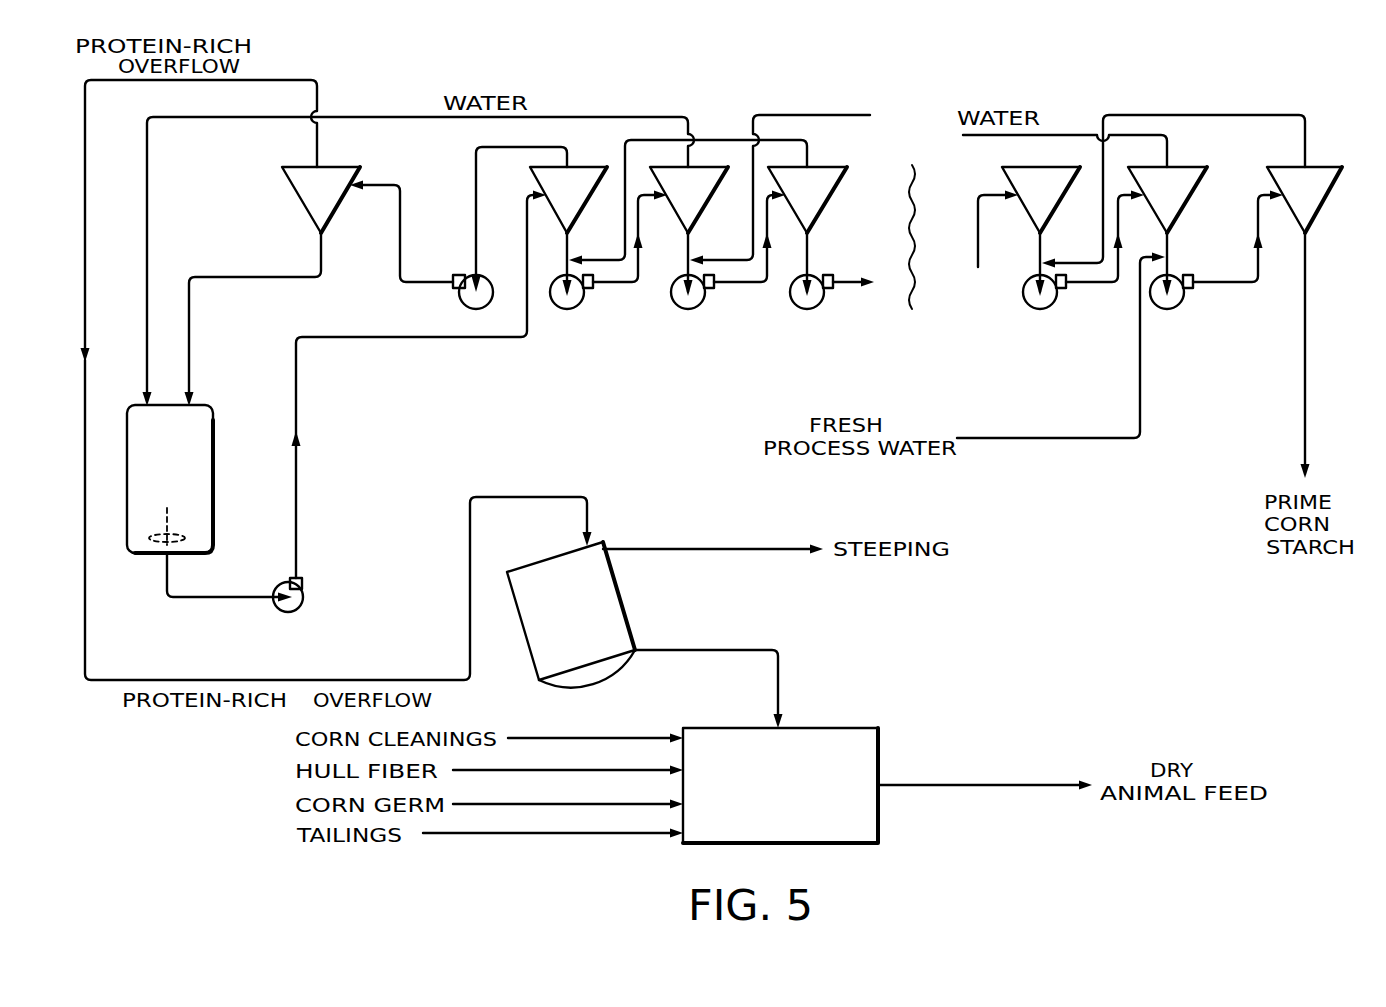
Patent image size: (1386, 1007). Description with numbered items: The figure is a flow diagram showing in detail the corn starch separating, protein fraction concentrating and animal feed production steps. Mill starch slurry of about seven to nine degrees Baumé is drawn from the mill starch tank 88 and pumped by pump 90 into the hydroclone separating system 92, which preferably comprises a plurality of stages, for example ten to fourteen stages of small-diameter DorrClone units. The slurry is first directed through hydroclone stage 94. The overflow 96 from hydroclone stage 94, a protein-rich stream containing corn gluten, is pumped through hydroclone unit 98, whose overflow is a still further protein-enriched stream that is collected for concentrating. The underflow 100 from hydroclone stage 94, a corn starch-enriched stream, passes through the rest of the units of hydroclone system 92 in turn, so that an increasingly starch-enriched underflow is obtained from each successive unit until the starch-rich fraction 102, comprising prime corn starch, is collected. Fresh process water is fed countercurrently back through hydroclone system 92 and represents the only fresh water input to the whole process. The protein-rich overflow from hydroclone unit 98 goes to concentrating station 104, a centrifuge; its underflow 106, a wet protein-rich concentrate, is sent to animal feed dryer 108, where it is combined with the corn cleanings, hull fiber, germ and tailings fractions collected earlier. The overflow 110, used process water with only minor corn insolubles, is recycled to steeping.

The mill starch tank 88 is at (216, 473).
The pump 90 is at (305, 602).
The hydroclone separating system 92 is at (1345, 70).
The hydroclone stage 94 is at (535, 179).
The overflow 96 is at (472, 191).
The hydroclone unit 98 is at (298, 199).
The underflow 100 is at (628, 284).
The starch-rich fraction 102 is at (1307, 338).
The concentrating station 104 is at (605, 540).
The underflow 106 is at (780, 679).
The animal feed dryer 108 is at (868, 726).
The overflow 110 is at (708, 548).